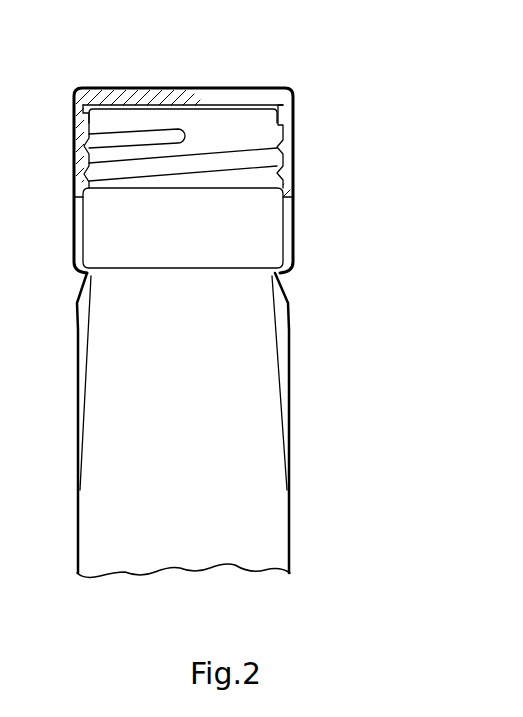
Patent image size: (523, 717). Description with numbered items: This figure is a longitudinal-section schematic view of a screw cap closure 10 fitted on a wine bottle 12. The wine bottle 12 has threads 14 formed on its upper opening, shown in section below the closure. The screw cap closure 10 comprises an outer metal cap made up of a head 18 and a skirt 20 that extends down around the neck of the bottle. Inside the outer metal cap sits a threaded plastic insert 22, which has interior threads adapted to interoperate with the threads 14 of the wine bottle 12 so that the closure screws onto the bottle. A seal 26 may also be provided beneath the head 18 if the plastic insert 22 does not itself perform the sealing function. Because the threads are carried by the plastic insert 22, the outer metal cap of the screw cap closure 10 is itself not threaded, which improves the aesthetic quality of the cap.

The screw cap closure 10 is at (293, 237).
The wine bottle 12 is at (279, 350).
The threads 14 is at (192, 163).
The head 18 is at (72, 225).
The skirt 20 is at (78, 390).
The threaded plastic insert 22 is at (217, 92).
The seal 26 is at (142, 106).